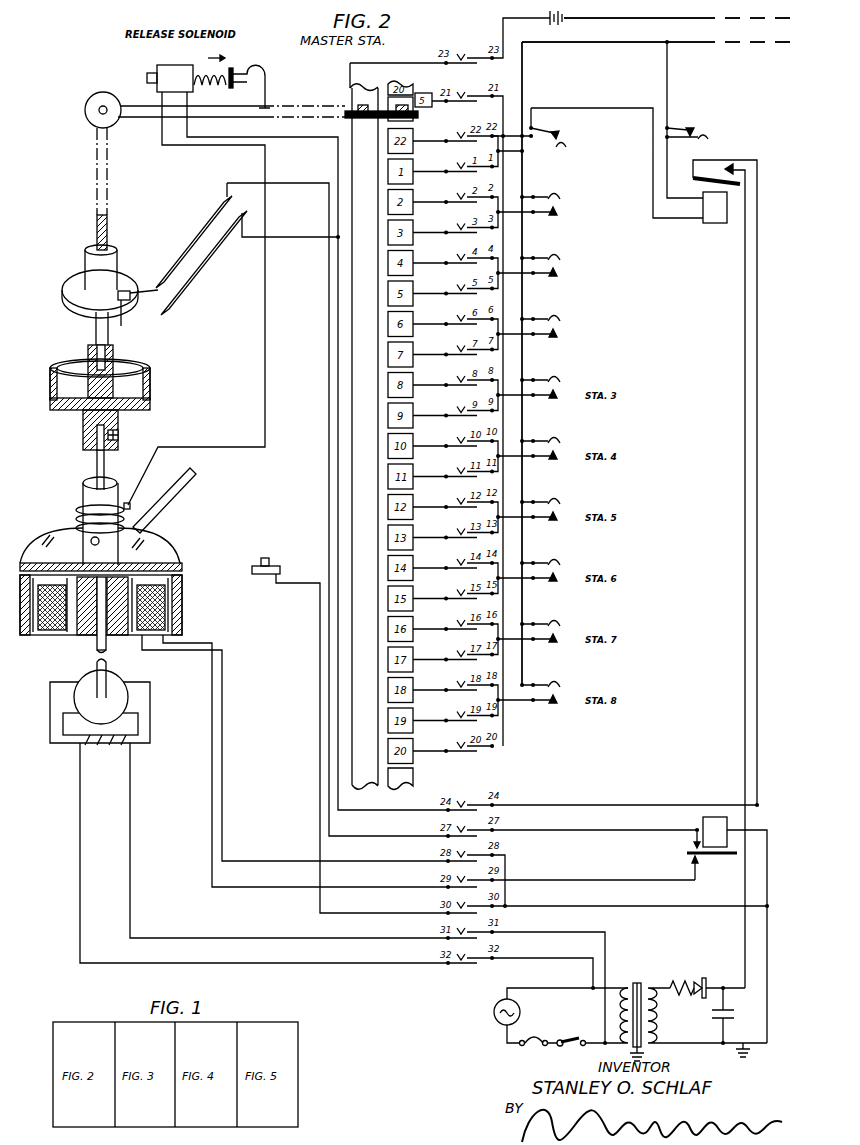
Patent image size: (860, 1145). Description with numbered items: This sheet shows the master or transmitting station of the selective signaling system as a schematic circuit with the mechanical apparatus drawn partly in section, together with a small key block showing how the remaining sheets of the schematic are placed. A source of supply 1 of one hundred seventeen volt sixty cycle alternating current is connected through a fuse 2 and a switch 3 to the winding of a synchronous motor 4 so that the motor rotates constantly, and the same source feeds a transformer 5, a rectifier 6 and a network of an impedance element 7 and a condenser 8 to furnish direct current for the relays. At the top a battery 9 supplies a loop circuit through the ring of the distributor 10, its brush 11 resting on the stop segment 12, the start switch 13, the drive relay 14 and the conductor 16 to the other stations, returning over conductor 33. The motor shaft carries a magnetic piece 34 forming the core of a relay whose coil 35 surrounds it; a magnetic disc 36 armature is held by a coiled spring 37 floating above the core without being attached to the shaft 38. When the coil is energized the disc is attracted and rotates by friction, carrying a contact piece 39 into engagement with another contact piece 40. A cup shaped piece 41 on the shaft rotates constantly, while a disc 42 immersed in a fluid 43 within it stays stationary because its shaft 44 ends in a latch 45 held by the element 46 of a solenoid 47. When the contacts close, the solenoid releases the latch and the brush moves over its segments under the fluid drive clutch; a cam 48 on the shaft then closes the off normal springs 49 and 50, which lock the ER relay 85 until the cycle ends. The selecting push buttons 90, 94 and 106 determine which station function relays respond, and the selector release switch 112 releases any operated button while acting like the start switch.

The source of supply 1 is at (497, 1021).
The fuse 2 is at (534, 1035).
The switch 3 is at (586, 1041).
The synchronous motor 4 is at (143, 742).
The transformer 5 is at (637, 990).
The rectifier 6 is at (706, 985).
The impedance element 7 is at (681, 982).
The condenser 8 is at (729, 1017).
The battery 9 is at (577, 20).
The distributor 10 is at (357, 98).
The brush 11 is at (364, 119).
The stop segment 12 is at (418, 115).
The start switch 13 is at (677, 140).
The drive relay 14 is at (703, 196).
The conductor 16 is at (707, 42).
The conductor 33 is at (630, 20).
The magnetic piece 34 is at (88, 632).
The coil 35 is at (167, 593).
The magnetic disc 36 is at (167, 550).
The coiled spring 37 is at (80, 508).
The shaft 38 is at (104, 468).
The contact piece 39 is at (182, 493).
The contact piece 40 is at (275, 562).
The cup shaped piece 41 is at (85, 420).
The disc 42 is at (55, 377).
The fluid 43 is at (53, 405).
The shaft 44 is at (110, 337).
The latch 45 is at (200, 107).
The element 46 is at (240, 70).
The solenoid 47 is at (172, 68).
The cam 48 is at (123, 262).
The off normal spring 49 is at (184, 250).
The off normal spring 50 is at (200, 268).
The ER relay 85 is at (703, 821).
The all call selecting push button 90 is at (560, 216).
The push button 94 is at (562, 278).
The push button 106 is at (558, 338).
The selector release switch 112 is at (612, 163).